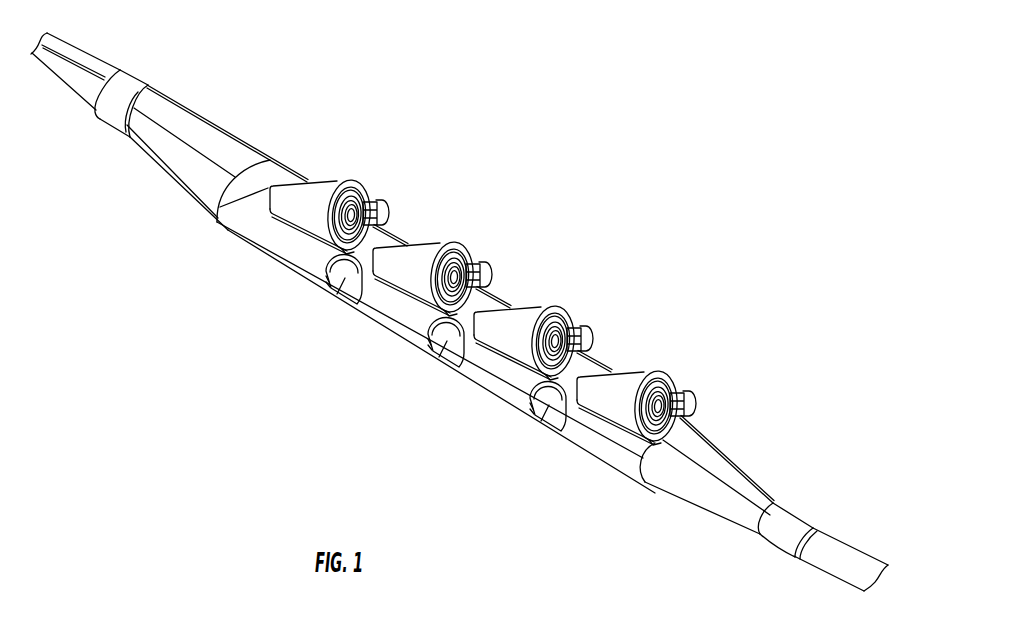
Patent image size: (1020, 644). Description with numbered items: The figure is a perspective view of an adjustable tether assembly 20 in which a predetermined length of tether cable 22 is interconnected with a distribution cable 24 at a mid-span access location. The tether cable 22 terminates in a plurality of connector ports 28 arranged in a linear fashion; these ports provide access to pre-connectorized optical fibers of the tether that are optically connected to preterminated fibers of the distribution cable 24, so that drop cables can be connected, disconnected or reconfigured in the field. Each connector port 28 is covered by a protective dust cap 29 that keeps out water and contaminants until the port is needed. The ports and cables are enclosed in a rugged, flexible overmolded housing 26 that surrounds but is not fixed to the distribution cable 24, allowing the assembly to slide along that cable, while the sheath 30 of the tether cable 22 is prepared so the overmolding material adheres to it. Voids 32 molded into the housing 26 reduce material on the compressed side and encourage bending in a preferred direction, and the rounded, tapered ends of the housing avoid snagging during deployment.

The adjustable tether assembly 20 is at (522, 132).
The tether cable 22 is at (75, 55).
The distribution cable 24 is at (82, 88).
The housing 26 is at (185, 125).
The connector port 28 is at (350, 193).
The protective dust cap 29 is at (382, 210).
The sheath 30 is at (105, 68).
The voids 32 is at (545, 410).